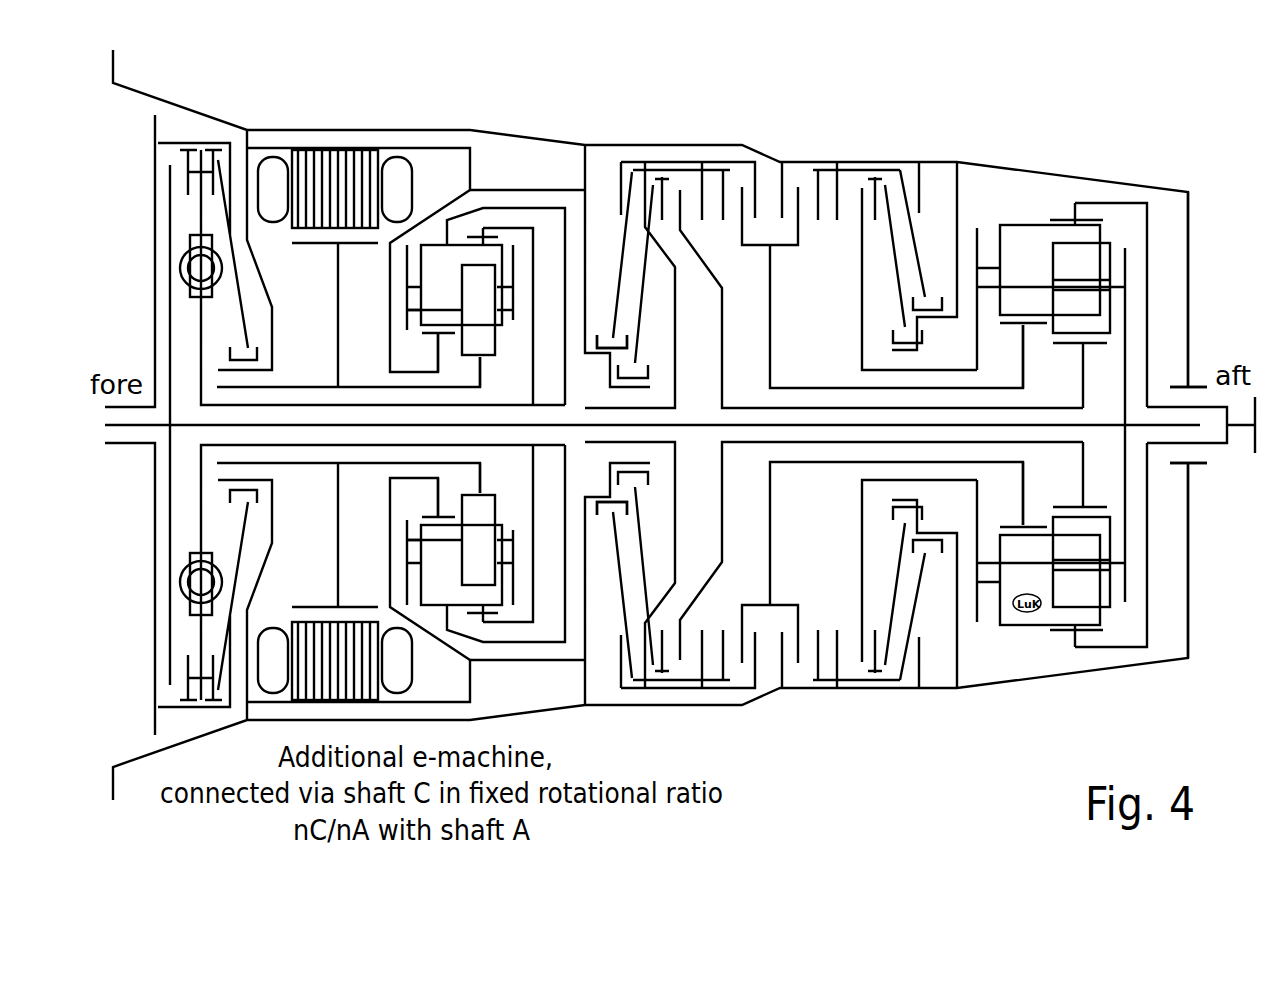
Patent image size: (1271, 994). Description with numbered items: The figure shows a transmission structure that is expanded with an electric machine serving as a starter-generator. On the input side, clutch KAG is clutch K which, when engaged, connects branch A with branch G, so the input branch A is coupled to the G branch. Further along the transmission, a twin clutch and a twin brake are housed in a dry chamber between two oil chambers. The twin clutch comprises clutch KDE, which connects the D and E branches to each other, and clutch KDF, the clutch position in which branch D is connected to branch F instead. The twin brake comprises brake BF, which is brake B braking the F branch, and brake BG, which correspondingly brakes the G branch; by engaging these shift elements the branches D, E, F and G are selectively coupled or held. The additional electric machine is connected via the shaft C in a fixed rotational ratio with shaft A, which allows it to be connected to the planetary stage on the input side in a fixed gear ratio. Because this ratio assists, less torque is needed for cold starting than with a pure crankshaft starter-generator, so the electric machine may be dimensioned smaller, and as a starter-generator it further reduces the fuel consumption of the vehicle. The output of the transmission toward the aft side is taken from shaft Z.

The clutch KAG is at (361, 375).
The branch A is at (477, 425).
The brake B is at (434, 425).
The shaft C (e-machine shaft) C is at (492, 425).
The clutch KDE is at (834, 374).
The branch D is at (600, 425).
The clutch KDF is at (871, 390).
The brake BF is at (865, 365).
The brake BG is at (901, 390).
The branch G is at (1062, 418).
The branch E is at (1080, 425).
The branch F is at (1006, 425).
The output shaft Z is at (1166, 425).